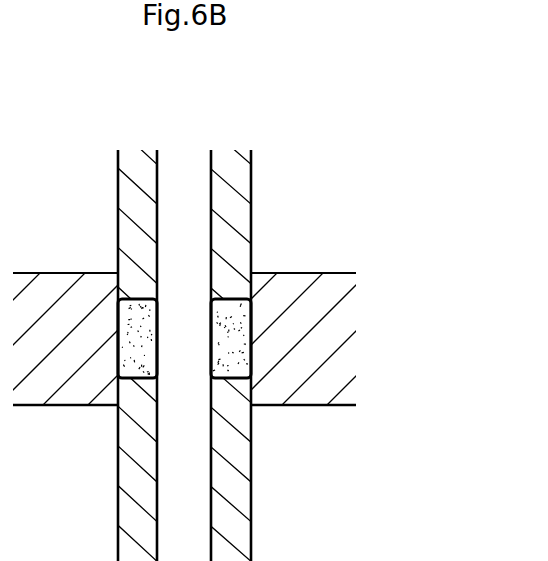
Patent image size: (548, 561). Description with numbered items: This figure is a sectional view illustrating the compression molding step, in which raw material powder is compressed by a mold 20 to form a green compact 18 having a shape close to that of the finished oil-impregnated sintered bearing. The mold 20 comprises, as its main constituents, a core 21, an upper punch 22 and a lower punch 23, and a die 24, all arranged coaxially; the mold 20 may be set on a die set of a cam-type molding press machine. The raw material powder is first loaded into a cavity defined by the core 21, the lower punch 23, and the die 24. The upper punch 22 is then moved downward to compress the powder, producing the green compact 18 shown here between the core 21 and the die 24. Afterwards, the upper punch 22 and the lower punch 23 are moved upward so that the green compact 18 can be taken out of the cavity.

The mold 20 is at (229, 338).
The core 21 is at (170, 189).
The upper punch 22 is at (233, 218).
The lower punch 23 is at (130, 510).
The die 24 is at (50, 285).
The green compact 18 is at (245, 315).